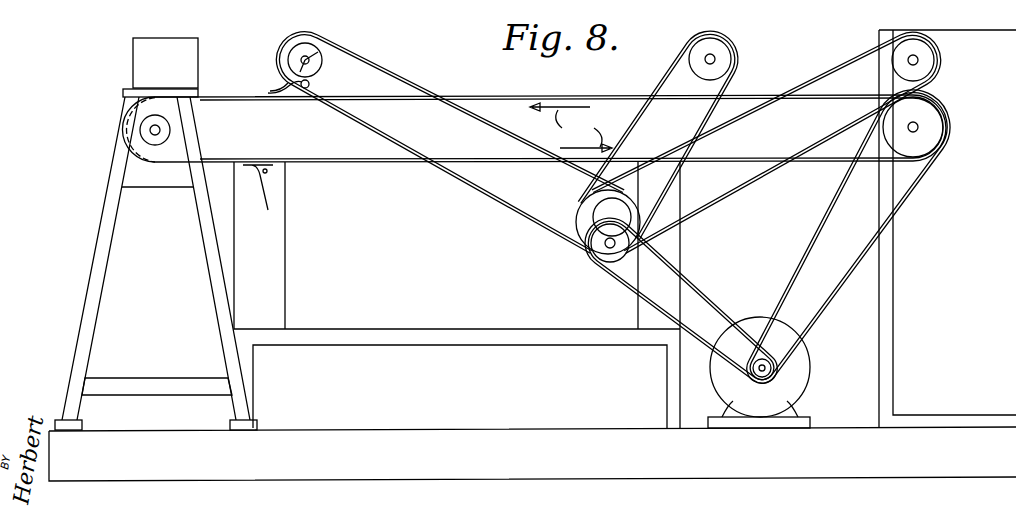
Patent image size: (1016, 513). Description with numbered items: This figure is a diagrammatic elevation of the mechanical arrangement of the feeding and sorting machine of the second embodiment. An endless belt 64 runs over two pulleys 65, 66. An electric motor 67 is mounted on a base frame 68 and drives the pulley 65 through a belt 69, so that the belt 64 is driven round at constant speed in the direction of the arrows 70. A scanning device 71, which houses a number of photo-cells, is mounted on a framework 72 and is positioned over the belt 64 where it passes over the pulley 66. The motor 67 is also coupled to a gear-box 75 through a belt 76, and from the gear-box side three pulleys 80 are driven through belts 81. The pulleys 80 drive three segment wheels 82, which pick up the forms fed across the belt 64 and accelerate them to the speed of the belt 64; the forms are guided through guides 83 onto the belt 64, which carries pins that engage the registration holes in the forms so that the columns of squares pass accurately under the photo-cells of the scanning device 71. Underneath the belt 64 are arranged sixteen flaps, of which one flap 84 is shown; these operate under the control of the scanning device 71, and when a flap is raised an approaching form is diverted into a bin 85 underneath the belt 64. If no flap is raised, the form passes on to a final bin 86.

The endless belt 64 is at (498, 94).
The pulley 65 is at (942, 114).
The pulley 66 is at (162, 165).
The electric motor 67 is at (805, 367).
The base frame 68 is at (532, 454).
The belt 69 is at (858, 262).
The arrows 70 is at (571, 127).
The scanning device 71 is at (170, 76).
The framework 72 is at (102, 246).
The gear-box 75 is at (598, 214).
The belt 76 is at (716, 310).
The pulleys 80 is at (290, 52).
The belts 81 is at (398, 70).
The segment wheels 82 is at (318, 52).
The guides 83 is at (272, 88).
The flap 84 is at (272, 196).
The bin 85 is at (270, 267).
The final bin 86 is at (668, 245).